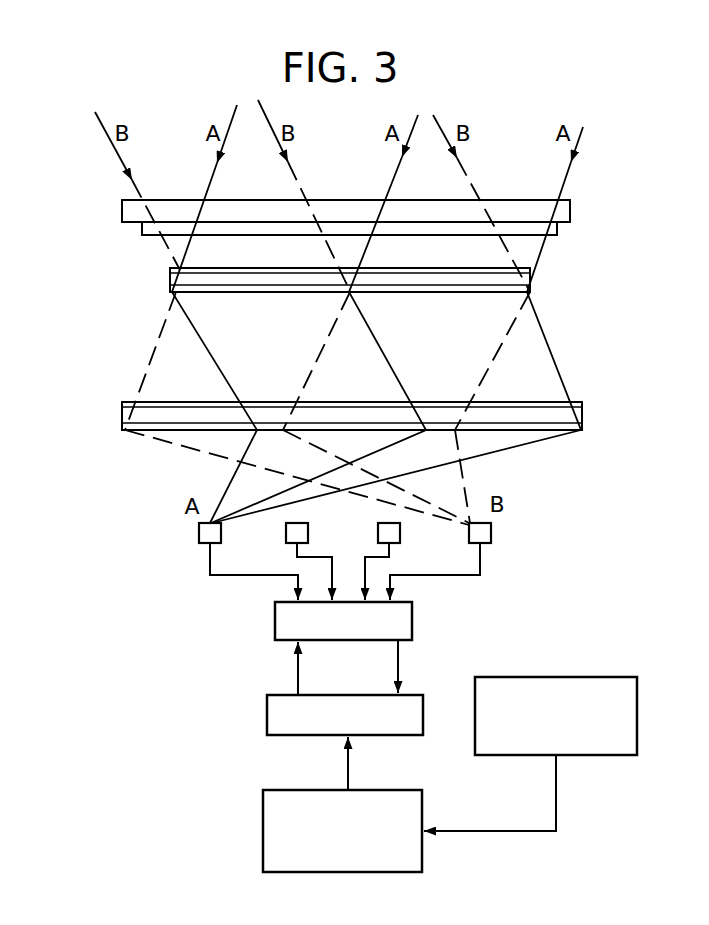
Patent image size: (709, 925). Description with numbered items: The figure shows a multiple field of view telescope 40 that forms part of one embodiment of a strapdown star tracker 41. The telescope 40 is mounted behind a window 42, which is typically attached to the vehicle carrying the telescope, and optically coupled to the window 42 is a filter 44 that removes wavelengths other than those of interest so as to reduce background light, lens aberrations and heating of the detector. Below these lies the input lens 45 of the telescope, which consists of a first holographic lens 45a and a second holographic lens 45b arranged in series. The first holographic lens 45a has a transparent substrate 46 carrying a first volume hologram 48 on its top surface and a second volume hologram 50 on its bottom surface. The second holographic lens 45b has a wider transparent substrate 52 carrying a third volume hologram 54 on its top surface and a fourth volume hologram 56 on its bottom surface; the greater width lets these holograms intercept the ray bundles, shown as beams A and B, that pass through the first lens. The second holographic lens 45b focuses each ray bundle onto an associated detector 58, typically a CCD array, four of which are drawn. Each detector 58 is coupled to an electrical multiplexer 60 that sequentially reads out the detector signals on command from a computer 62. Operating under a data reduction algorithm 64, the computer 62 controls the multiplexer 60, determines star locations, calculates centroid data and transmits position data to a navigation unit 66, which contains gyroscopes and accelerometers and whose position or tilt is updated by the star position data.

The multiple field of view telescope 40 is at (113, 577).
The strapdown star tracker 41 is at (135, 709).
The window 42 is at (570, 208).
The filter 44 is at (557, 230).
The input lens 45 is at (92, 257).
The first holographic lens 45a is at (153, 283).
The second holographic lens 45b is at (110, 405).
The transparent substrate 46 is at (530, 283).
The first volume hologram 48 is at (530, 272).
The second volume hologram 50 is at (530, 290).
The transparent substrate 52 is at (585, 415).
The third volume hologram 54 is at (582, 403).
The fourth volume hologram 56 is at (582, 430).
The detector 58 is at (199, 543).
The electrical multiplexer 60 is at (412, 612).
The computer 62 is at (267, 715).
The data reduction algorithm 64 is at (637, 712).
The navigation unit 66 is at (263, 808).